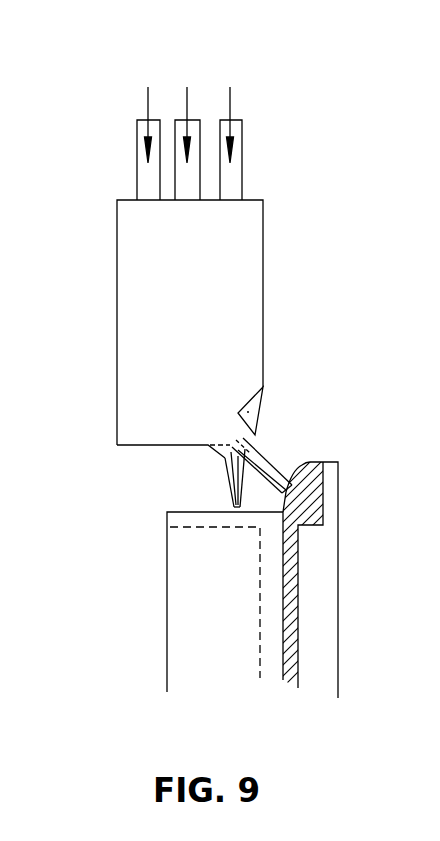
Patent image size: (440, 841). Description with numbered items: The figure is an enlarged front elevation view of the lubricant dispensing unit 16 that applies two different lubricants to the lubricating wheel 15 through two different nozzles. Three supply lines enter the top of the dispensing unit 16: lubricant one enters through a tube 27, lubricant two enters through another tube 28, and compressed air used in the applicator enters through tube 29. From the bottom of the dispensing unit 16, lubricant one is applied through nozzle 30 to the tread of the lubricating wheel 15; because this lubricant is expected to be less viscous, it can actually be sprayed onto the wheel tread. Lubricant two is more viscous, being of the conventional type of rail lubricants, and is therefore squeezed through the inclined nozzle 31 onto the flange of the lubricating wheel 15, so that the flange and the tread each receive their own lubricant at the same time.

The container / mold body 15 is at (342, 530).
The dispensing head 16 is at (268, 275).
The tube 27 is at (137, 141).
The tube 28 is at (193, 110).
The tube 29 is at (245, 123).
The nozzle 30 is at (222, 477).
The nozzle 31 is at (263, 440).